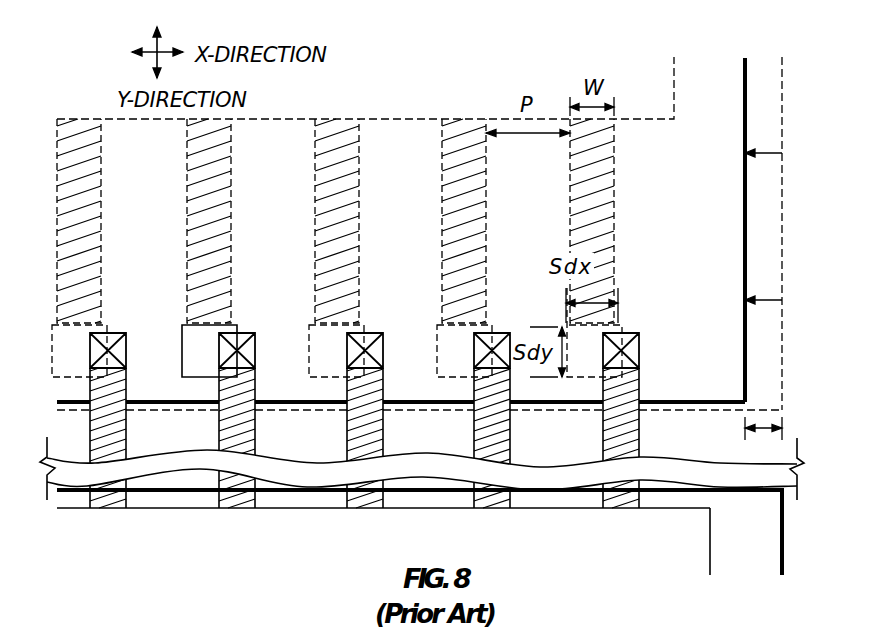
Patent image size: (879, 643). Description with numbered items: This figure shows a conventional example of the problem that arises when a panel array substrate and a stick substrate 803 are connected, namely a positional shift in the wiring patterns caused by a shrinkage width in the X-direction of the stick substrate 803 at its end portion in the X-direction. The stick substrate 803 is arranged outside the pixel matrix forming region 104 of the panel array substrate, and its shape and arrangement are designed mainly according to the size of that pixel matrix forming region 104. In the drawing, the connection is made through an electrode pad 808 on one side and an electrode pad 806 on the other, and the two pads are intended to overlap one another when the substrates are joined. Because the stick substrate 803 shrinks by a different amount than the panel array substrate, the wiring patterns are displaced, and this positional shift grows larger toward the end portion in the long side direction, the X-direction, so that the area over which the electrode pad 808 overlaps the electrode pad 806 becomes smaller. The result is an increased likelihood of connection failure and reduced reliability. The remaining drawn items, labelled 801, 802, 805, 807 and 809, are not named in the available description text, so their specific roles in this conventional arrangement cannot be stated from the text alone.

The pixel matrix forming region 104 is at (382, 544).
The exposure field boundary 801 is at (782, 265).
The lower layer region 802 is at (765, 547).
The stick substrate 803 is at (678, 166).
The upper pattern region 805 is at (443, 68).
The electrode pad 806 is at (437, 350).
The line pattern 807 is at (193, 250).
The electrode pad 808 is at (639, 345).
The lower wiring pattern 809 is at (357, 420).